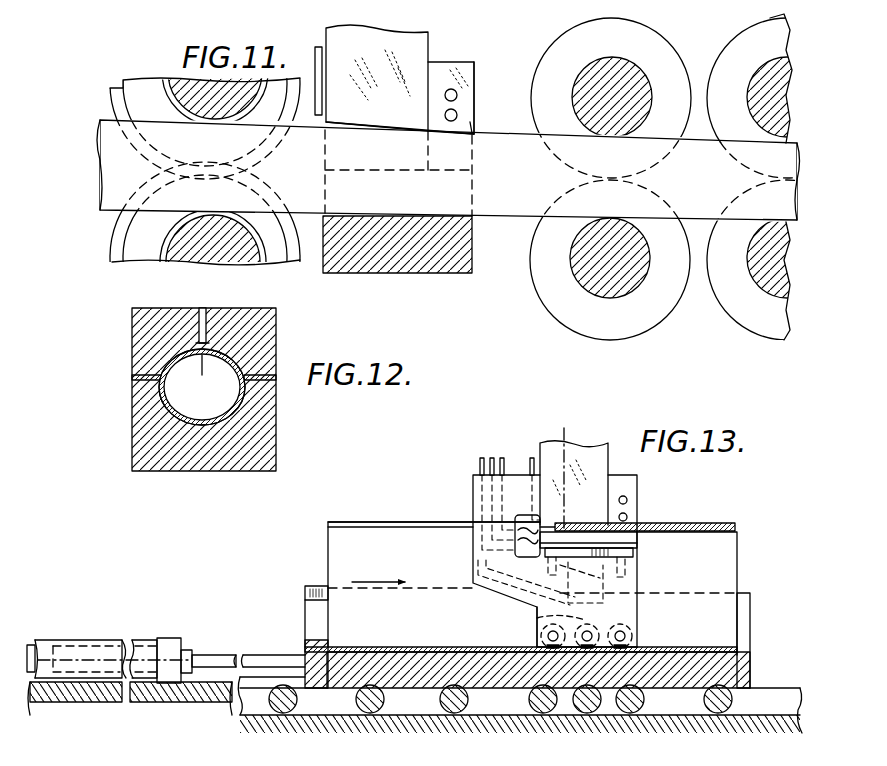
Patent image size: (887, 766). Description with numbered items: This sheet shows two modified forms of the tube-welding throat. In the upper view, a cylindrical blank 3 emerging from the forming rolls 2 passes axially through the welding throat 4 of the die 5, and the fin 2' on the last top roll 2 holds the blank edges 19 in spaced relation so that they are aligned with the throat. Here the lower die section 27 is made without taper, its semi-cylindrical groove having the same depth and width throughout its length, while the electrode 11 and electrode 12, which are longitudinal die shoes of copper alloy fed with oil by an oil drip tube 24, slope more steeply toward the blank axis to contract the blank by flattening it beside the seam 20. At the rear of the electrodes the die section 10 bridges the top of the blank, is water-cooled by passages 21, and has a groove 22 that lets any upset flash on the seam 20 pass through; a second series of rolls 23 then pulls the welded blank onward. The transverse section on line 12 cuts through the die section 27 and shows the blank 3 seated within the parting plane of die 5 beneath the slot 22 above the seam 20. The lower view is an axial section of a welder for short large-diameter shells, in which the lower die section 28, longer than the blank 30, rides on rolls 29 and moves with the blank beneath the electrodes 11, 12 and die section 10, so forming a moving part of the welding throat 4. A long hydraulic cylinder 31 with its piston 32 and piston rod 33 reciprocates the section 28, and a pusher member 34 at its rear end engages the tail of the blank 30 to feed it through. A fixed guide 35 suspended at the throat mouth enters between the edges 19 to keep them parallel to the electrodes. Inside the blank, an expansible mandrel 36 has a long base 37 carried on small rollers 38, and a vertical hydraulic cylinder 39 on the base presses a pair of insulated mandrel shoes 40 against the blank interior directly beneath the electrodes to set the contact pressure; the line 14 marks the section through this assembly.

In FIG. 11, the forming rolls 2 is at (184, 176).
In FIG. 11, the fin 2' is at (194, 167).
In FIG. 11, the cylindrical blank 3 is at (118, 165).
In FIG. 12, the cylindrical blank 3 is at (242, 403).
In FIG. 11, the welding throat 4 is at (382, 134).
In FIG. 12, the welding throat 4 is at (170, 356).
In FIG. 13, the welding throat 4 is at (578, 523).
In FIG. 11, the die 5 is at (476, 70).
In FIG. 12, the die 5 is at (130, 356).
In FIG. 11, the die section 10 is at (458, 68).
In FIG. 13, the die section 10 is at (638, 489).
In FIG. 11, the electrode 11 is at (365, 114).
In FIG. 13, the electrode 11 is at (553, 453).
In FIG. 11, the electrode 12 is at (505, 322).
In FIG. 13, the section line 14 is at (564, 605).
In FIG. 13, the longitudinal edges 19 is at (403, 522).
In FIG. 12, the seam 20 is at (202, 378).
In FIG. 13, the seam 20 is at (700, 531).
In FIG. 11, the passages 21 is at (445, 96).
In FIG. 13, the passages 21 is at (628, 500).
In FIG. 11, the groove 22 is at (468, 129).
In FIG. 12, the groove 22 is at (207, 340).
In FIG. 11, the rolls 23 is at (678, 68).
In FIG. 11, the oil drip tube 24 is at (320, 66).
In FIG. 11, the die section 27 is at (386, 273).
In FIG. 12, the die section 27 is at (132, 428).
In FIG. 13, the lower die section 28 is at (430, 687).
In FIG. 13, the rolls 29 is at (297, 700).
In FIG. 13, the blank 30 is at (328, 540).
In FIG. 13, the hydraulic cylinder 31 is at (102, 640).
In FIG. 13, the piston 32 is at (30, 645).
In FIG. 13, the piston rod 33 is at (229, 655).
In FIG. 13, the pusher member 34 is at (320, 646).
In FIG. 13, the fixed guide 35 is at (473, 546).
In FIG. 13, the expansible mandrel 36 is at (640, 578).
In FIG. 13, the mandrel base 37 is at (630, 617).
In FIG. 13, the rollers 38 is at (636, 637).
In FIG. 13, the vertical hydraulic cylinder 39 is at (605, 578).
In FIG. 13, the mandrel shoes 40 is at (637, 538).